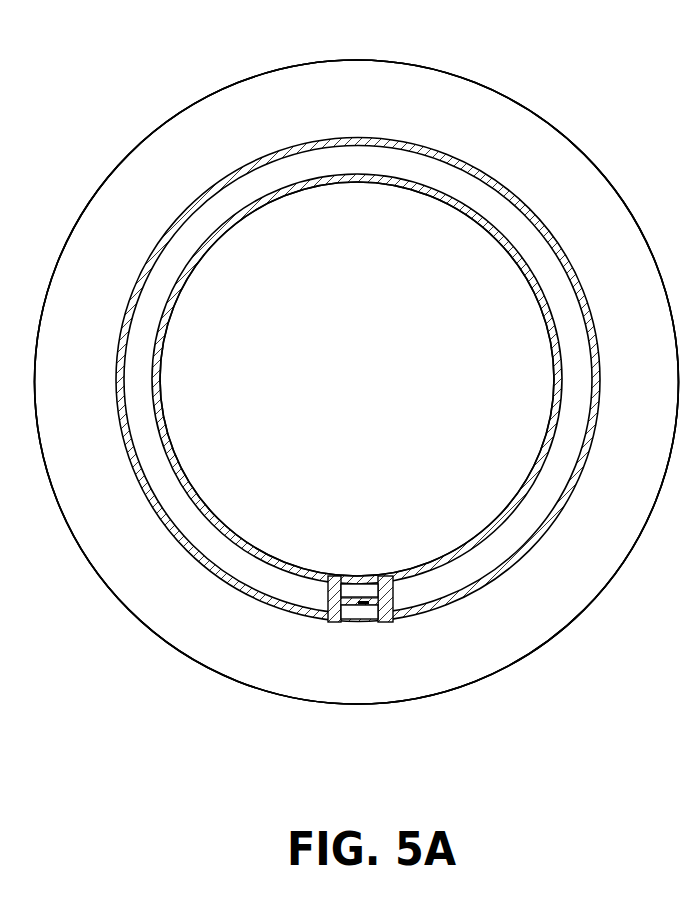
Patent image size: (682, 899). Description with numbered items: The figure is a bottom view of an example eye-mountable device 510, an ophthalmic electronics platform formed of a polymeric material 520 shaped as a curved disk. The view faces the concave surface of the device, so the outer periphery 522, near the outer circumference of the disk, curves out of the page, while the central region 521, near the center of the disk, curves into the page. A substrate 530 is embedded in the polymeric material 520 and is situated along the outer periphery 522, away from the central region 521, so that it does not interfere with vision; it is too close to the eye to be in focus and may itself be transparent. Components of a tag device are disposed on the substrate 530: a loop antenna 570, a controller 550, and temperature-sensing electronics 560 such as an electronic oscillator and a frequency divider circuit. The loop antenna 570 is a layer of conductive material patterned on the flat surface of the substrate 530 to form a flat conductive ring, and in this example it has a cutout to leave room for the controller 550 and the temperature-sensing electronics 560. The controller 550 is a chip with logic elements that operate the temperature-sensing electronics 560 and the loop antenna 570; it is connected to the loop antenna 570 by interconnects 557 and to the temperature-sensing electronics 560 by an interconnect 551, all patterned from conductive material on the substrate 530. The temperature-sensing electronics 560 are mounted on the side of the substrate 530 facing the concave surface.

The eye-mountable device 510 is at (112, 75).
The polymeric material 520 is at (75, 561).
The central region 521 is at (315, 341).
The outer periphery 522 is at (296, 95).
The substrate 530 is at (545, 533).
The loop antenna 570 is at (484, 569).
The controller 550 is at (350, 612).
The interconnect 551 is at (378, 601).
The interconnects 557 is at (369, 603).
The temperature-sensing electronics 560 is at (355, 588).